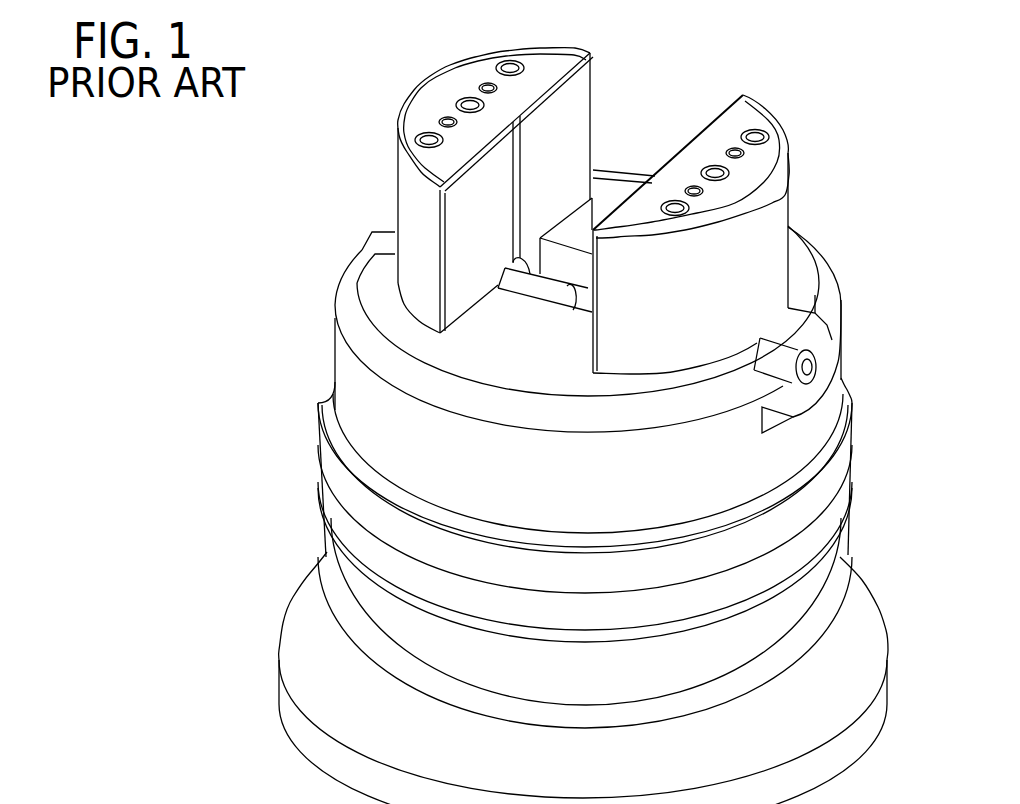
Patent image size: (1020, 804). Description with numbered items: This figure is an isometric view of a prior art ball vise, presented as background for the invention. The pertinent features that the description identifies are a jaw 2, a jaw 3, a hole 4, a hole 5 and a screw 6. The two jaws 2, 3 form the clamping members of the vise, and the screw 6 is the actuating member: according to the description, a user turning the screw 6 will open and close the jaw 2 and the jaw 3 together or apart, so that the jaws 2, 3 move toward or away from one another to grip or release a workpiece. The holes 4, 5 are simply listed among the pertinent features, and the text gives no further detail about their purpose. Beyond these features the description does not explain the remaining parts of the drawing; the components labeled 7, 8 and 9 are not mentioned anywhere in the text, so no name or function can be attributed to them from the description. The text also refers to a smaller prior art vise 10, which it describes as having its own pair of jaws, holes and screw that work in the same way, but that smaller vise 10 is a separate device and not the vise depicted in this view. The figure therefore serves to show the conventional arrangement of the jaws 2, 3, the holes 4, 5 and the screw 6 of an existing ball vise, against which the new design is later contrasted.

The jaw 2 is at (439, 169).
The jaw 3 is at (755, 234).
The hole 4 is at (469, 102).
The hole 5 is at (712, 175).
The screw 6 is at (778, 362).
The base flange 7 is at (583, 678).
The lower body 8 is at (585, 553).
The chuck body plate 9 is at (588, 351).
The smaller prior art vise 10 is at (545, 255).